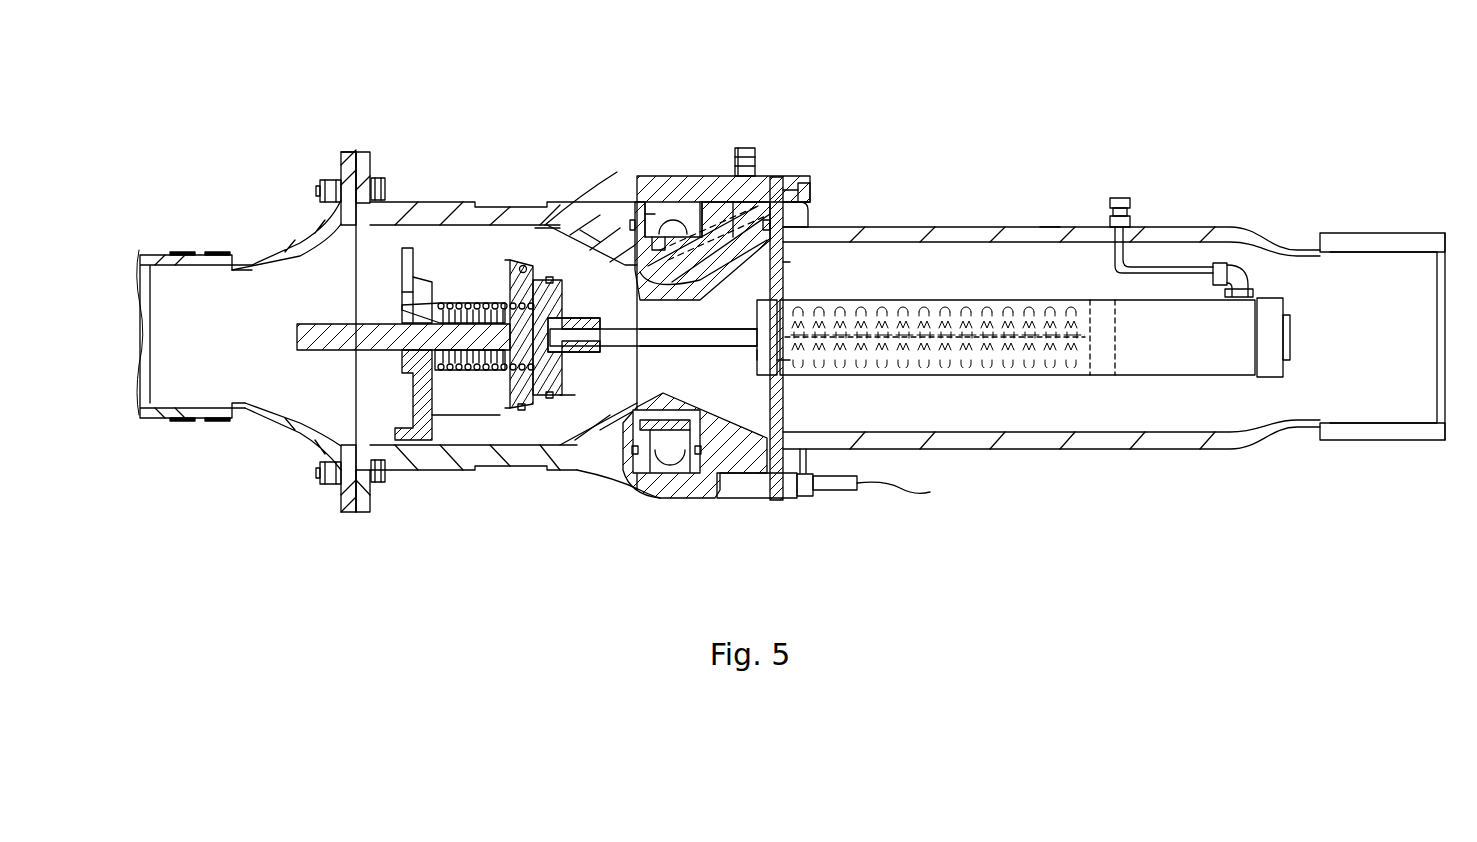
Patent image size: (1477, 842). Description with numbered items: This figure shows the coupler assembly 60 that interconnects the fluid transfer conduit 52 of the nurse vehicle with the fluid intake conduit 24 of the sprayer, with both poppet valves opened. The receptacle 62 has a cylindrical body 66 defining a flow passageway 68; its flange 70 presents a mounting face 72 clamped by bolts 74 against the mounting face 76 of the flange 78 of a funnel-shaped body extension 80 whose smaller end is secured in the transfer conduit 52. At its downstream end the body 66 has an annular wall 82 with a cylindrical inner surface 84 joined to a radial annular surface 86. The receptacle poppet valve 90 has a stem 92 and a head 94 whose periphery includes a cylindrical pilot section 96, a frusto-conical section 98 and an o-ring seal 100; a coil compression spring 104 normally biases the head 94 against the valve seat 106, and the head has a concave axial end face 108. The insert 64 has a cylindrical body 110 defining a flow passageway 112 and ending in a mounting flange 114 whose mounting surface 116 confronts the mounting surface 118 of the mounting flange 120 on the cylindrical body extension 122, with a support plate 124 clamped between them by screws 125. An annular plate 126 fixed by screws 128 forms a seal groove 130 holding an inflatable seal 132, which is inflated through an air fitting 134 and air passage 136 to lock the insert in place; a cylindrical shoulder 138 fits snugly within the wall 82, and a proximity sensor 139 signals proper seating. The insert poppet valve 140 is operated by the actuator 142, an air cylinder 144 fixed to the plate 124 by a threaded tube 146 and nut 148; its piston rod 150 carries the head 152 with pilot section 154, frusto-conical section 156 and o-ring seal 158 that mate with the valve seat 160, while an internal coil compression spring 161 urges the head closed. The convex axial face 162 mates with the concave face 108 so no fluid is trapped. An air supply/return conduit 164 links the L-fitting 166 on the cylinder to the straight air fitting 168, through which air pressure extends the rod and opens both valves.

The fluid intake conduit 24 is at (1325, 440).
The fluid transfer conduit 52 is at (150, 420).
The coupler assembly 60 is at (652, 92).
The receptacle 62 is at (497, 165).
The insert 64 is at (1058, 200).
The cylindrical body 66 is at (432, 478).
The flow passageway 68 is at (452, 418).
The flange 70 is at (363, 152).
The mounting face 72 is at (341, 160).
The bolts 74 is at (385, 190).
The mounting face 76 is at (368, 200).
The flange 78 is at (348, 152).
The funnel-shaped body extension 80 is at (290, 440).
The annular wall 82 is at (668, 200).
The cylindrical inner surface 84 is at (655, 205).
The annular surface 86 is at (592, 232).
The poppet valve 90 is at (395, 300).
The stem 92 is at (297, 330).
The head 94 is at (505, 292).
The cylindrical/pilot section 96 is at (542, 280).
The frusto-conical section 98 is at (519, 267).
The o-ring seal 100 is at (522, 410).
The coil compression spring 104 is at (455, 303).
The valve seat 106 is at (556, 396).
The axial end face 108 is at (572, 316).
The cylindrical body 110 is at (700, 176).
The flow passageway 112 is at (708, 408).
The mounting flange 114 is at (788, 180).
The mounting surface 116 is at (810, 220).
The mounting surface 118 is at (800, 240).
The mounting flange 120 is at (800, 190).
The cylindrical body extension 122 is at (1175, 449).
The support plate 124 is at (790, 262).
The screws 125 is at (820, 195).
The annular plate 126 is at (645, 214).
The screws 128 is at (625, 470).
The seal groove 130 is at (660, 202).
The inflatable seal 132 is at (690, 178).
The air fitting 134 is at (750, 148).
The air passage 136 is at (790, 176).
The cylindrical shoulder 138 is at (733, 176).
The proximity sensor 139 is at (820, 498).
The poppet valve 140 is at (650, 310).
The poppet valve actuator 142 is at (1120, 378).
The air cylinder 144 is at (978, 300).
The threaded tube 146 is at (790, 284).
The nut 148 is at (778, 365).
The piston rod 150 is at (765, 355).
The head 152 is at (634, 350).
The cylindrical pilot section 154 is at (538, 228).
The frusto-conical section 156 is at (550, 400).
The o-ring seal 158 is at (567, 400).
The valve seat 160 is at (700, 255).
The coil compression spring 161 is at (960, 375).
The axial face 162 is at (505, 385).
The air supply/return conduit 164 is at (1165, 265).
The L-fitting 166 is at (1242, 285).
The straight air fitting 168 is at (1130, 210).